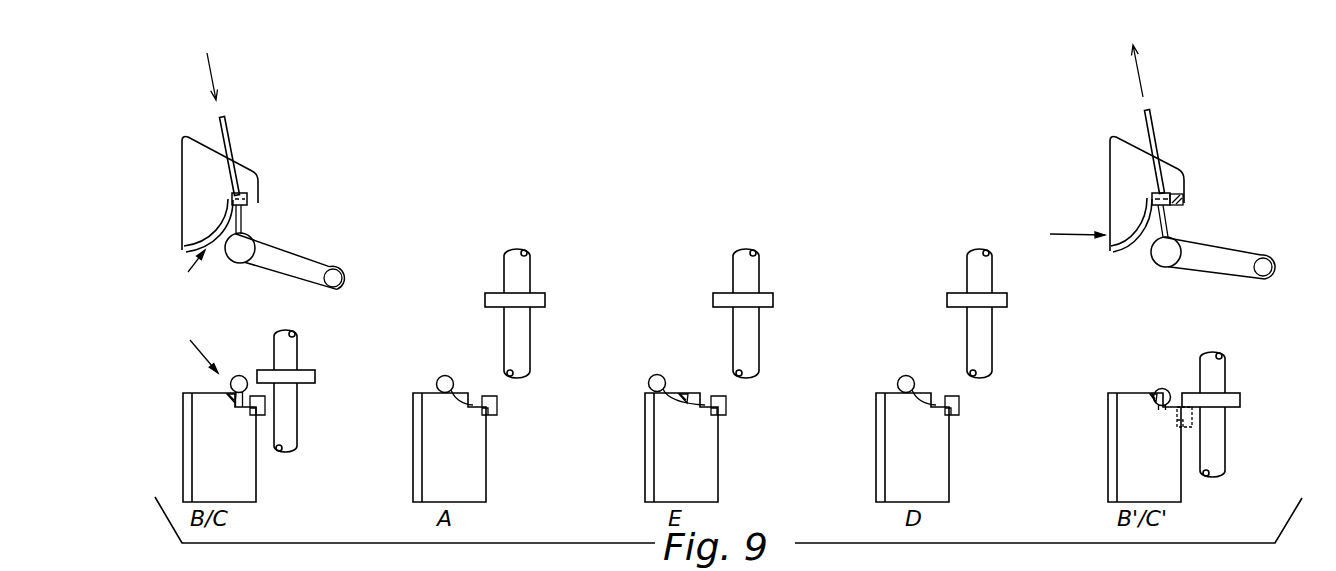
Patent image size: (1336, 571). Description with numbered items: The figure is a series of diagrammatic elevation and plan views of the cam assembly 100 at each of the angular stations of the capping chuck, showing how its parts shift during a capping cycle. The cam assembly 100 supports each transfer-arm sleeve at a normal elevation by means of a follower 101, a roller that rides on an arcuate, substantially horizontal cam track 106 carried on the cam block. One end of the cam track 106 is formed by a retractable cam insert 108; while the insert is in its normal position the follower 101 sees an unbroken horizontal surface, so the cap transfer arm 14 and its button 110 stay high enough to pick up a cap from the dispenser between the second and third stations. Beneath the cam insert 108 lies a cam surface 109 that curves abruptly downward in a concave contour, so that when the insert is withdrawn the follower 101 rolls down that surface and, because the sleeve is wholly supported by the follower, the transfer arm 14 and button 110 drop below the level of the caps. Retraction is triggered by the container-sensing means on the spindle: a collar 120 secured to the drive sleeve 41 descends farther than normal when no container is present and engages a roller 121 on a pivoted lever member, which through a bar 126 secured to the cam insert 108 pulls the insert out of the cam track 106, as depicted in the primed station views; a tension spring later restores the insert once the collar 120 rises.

The cap transfer arm 14 is at (290, 258).
The drive sleeve 41 is at (300, 412).
The cam assembly 100 is at (629, 297).
The follower 101 is at (248, 204).
The cam track 106 is at (192, 232).
The cam insert 108 is at (228, 197).
The cam surface 109 is at (1185, 200).
The button 110 is at (343, 278).
The collar 120 is at (312, 372).
The roller 121 is at (498, 404).
The bar 126 is at (232, 150).